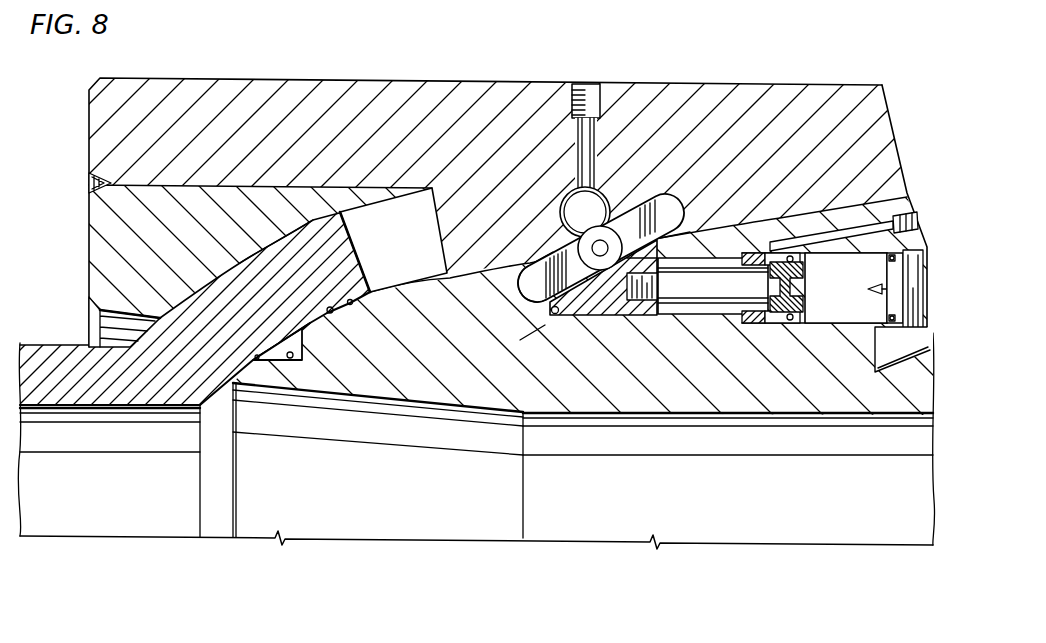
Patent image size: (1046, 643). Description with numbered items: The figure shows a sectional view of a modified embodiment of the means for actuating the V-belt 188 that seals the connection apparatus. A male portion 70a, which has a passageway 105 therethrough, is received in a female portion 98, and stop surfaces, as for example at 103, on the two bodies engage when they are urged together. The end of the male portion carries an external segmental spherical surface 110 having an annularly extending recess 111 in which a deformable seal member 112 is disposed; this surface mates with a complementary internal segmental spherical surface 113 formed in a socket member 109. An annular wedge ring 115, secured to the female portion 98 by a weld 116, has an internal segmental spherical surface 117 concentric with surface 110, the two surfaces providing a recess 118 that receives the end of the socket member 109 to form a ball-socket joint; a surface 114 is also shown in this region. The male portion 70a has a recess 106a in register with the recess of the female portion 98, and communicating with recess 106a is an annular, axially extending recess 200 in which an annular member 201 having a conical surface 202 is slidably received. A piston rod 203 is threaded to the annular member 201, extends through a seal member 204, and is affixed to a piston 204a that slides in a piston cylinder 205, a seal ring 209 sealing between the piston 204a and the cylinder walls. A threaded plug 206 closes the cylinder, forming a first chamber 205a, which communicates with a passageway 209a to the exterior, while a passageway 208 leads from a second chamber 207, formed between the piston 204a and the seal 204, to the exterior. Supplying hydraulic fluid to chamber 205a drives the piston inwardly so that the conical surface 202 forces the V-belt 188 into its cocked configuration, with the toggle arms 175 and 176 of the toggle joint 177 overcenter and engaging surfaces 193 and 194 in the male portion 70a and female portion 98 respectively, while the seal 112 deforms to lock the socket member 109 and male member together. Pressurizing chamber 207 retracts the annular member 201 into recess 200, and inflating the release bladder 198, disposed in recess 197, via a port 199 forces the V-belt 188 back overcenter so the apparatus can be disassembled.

The female portion 98 is at (200, 85).
The stop surfaces 103 is at (842, 205).
The passageway 105 is at (468, 510).
The recess 106a is at (572, 320).
The socket member 109 is at (115, 332).
The external segmental spherical surface 110 is at (328, 316).
The annularly extending recess 111 is at (287, 358).
The seal member 112 is at (322, 392).
The internal segmental spherical surface 113 is at (348, 300).
The sliding surface 114 is at (273, 243).
The wedge ring 115 is at (108, 233).
The weld 116 is at (92, 180).
The internal segmental spherical surface 117 is at (196, 286).
The recess 118 is at (400, 215).
The toggle arm 175 is at (520, 293).
The toggle arm 176 is at (732, 170).
The toggle joint 177 is at (600, 262).
The V-belt 188 is at (543, 252).
The engaging surface 193 is at (532, 330).
The engaging surface 194 is at (675, 238).
The recess 197 is at (606, 193).
The release bladder 198 is at (568, 198).
The port 199 is at (590, 83).
The annular recess 200 is at (674, 318).
The annular member 201 is at (625, 318).
The conical surface 202 is at (618, 182).
The piston rod 203 is at (713, 288).
The seal member 204 is at (807, 253).
The piston 204a is at (750, 327).
The piston cylinder 205 is at (825, 325).
The first chamber 205a is at (822, 282).
The threaded plug 206 is at (893, 312).
The second chamber 207 is at (767, 253).
The passageway 208 is at (880, 220).
The seal ring 209 is at (790, 327).
The passageway 209a is at (907, 367).
The male portion 70a is at (850, 400).